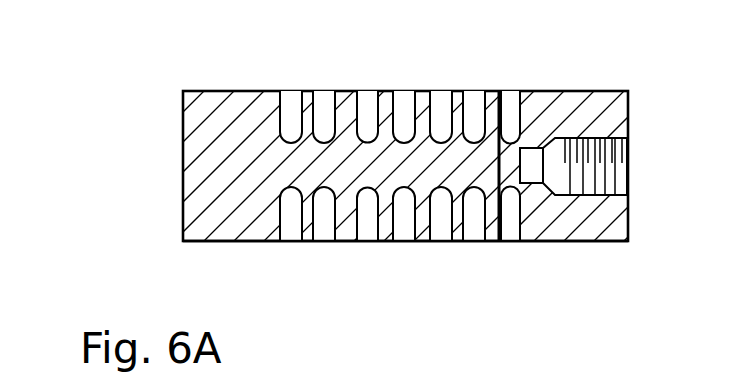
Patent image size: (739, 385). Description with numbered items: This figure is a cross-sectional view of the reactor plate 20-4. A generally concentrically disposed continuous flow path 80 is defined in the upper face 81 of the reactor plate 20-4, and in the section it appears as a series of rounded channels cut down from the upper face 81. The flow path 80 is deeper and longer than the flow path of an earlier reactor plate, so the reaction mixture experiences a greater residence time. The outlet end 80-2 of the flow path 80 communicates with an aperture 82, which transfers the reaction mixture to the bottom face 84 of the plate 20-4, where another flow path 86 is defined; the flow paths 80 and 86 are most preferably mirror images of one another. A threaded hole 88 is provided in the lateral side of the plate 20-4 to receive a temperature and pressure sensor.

The reactor plate 20-4 is at (158, 241).
The continuous flow path 80 is at (363, 99).
The outlet end 80-2 is at (510, 112).
The upper face 81 is at (213, 91).
The aperture 82 is at (517, 166).
The bottom face 84 is at (185, 242).
The flow path 86 is at (366, 234).
The threaded hole 88 is at (625, 155).